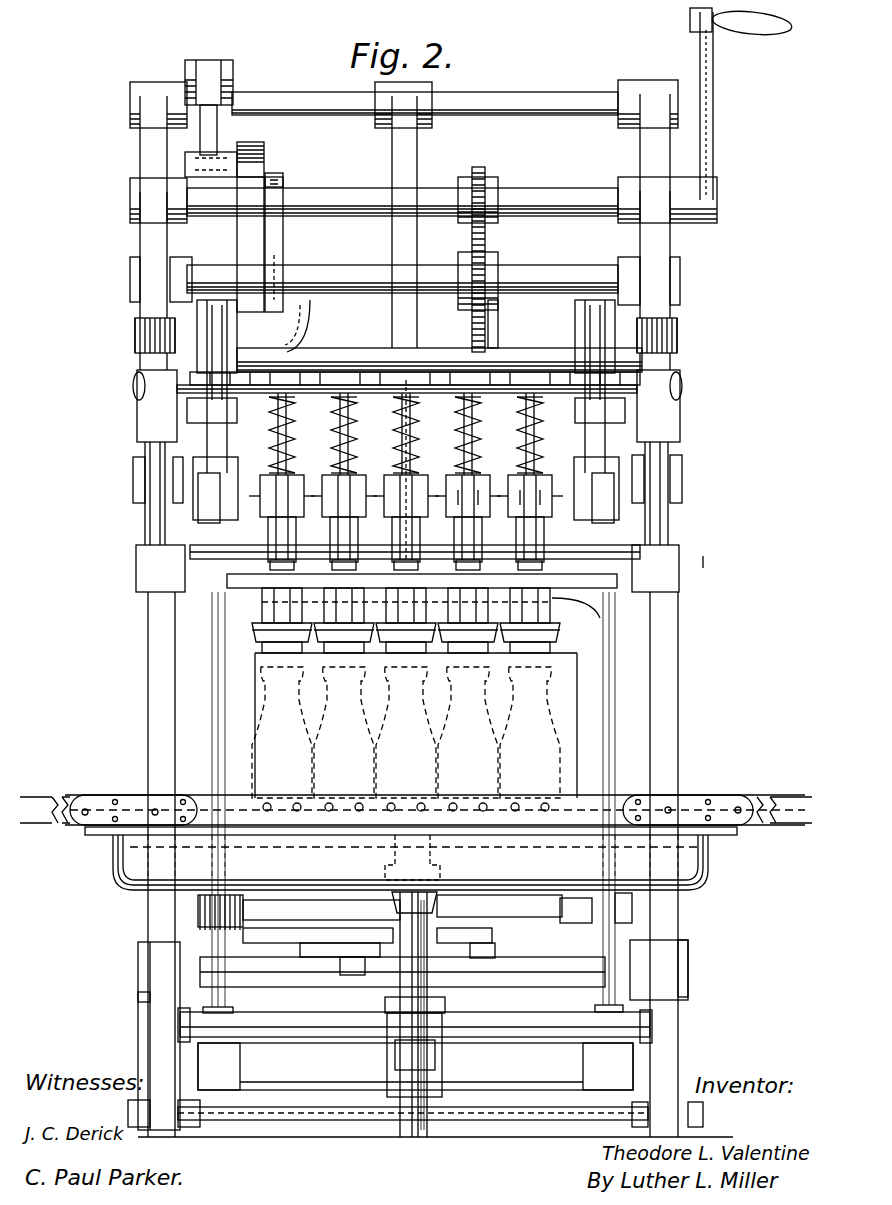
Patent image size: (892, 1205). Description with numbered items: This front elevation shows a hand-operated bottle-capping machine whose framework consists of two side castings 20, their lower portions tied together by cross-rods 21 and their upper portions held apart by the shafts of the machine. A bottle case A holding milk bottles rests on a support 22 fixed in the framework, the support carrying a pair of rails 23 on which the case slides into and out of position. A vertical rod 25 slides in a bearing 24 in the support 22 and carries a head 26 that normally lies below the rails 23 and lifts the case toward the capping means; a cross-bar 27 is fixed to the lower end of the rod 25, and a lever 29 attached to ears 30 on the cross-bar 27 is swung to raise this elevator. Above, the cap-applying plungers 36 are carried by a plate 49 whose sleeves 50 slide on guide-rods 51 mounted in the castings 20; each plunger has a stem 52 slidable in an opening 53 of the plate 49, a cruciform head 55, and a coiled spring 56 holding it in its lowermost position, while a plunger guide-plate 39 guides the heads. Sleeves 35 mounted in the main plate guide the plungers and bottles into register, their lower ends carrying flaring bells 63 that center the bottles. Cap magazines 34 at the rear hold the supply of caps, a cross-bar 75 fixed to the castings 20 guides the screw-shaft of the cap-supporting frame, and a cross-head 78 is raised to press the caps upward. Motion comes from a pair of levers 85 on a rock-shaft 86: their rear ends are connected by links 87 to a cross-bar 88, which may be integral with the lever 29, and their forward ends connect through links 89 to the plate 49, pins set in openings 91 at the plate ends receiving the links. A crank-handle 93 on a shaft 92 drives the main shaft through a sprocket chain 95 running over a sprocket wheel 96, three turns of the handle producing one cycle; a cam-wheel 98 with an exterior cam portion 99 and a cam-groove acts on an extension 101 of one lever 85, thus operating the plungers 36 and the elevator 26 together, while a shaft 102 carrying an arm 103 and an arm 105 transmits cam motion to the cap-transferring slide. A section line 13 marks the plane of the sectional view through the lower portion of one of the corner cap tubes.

The side castings 20 is at (406, 608).
The cross-rods 21 is at (413, 1135).
The support 22 is at (411, 876).
The rails 23 is at (416, 813).
The bearing 24 is at (411, 860).
The vertical rod 25 is at (415, 925).
The head 26 is at (415, 857).
The cross-bar 27 is at (415, 1044).
The lever 29 is at (415, 1082).
The ears 30 is at (406, 1029).
The cap magazines 34 is at (322, 604).
The sleeves 35 is at (410, 620).
The cap-applying plungers 36 is at (415, 540).
The plunger guide-plate 39 is at (422, 554).
The plate 49 is at (427, 470).
The sleeves 50 is at (405, 410).
The guide-rods 51 is at (407, 493).
The stem 52 is at (406, 499).
The opening 53 is at (409, 356).
The head 55 is at (499, 467).
The coiled springs 56 is at (406, 434).
The bells 63 is at (593, 617).
The cross-bar 75 is at (402, 957).
The cross-head 78 is at (316, 950).
The levers 85 is at (400, 338).
The rock-shaft 86 is at (503, 331).
The links 87 is at (404, 800).
The cross-bar 88 is at (415, 1106).
The links 89 is at (380, 386).
The openings 91 is at (402, 268).
The shaft 92 is at (402, 183).
The crank-handle 93 is at (741, 104).
The sprocket chain 95 is at (495, 243).
The sprocket wheel 96 is at (500, 250).
The cam-wheel 98 is at (276, 242).
The cam portion 99 is at (289, 161).
The extension 101 is at (245, 141).
The shaft 102 is at (425, 88).
The arm 103 is at (236, 82).
The arm 105 is at (386, 215).
The section line 13 is at (726, 568).
The bottle cases A is at (377, 725).